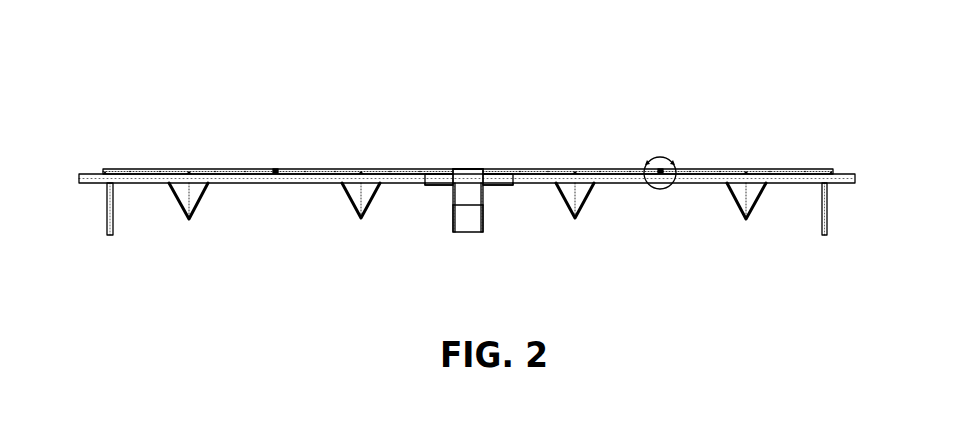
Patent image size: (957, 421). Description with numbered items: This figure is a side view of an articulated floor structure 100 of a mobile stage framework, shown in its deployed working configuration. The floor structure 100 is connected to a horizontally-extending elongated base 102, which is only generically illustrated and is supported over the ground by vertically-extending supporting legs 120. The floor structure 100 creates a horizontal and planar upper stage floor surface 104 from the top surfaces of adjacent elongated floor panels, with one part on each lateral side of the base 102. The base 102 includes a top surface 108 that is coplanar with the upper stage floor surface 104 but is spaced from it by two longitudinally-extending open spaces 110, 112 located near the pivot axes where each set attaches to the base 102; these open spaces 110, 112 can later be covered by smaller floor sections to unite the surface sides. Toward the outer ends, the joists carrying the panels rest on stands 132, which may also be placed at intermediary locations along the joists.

The floor structure 100 is at (467, 153).
The base 102 is at (467, 173).
The upper stage floor surface 104 is at (238, 169).
The top surface 108 is at (478, 168).
The open space 110 is at (450, 170).
The open space 112 is at (483, 173).
The supporting legs 120 is at (484, 233).
The stands 132 is at (112, 223).